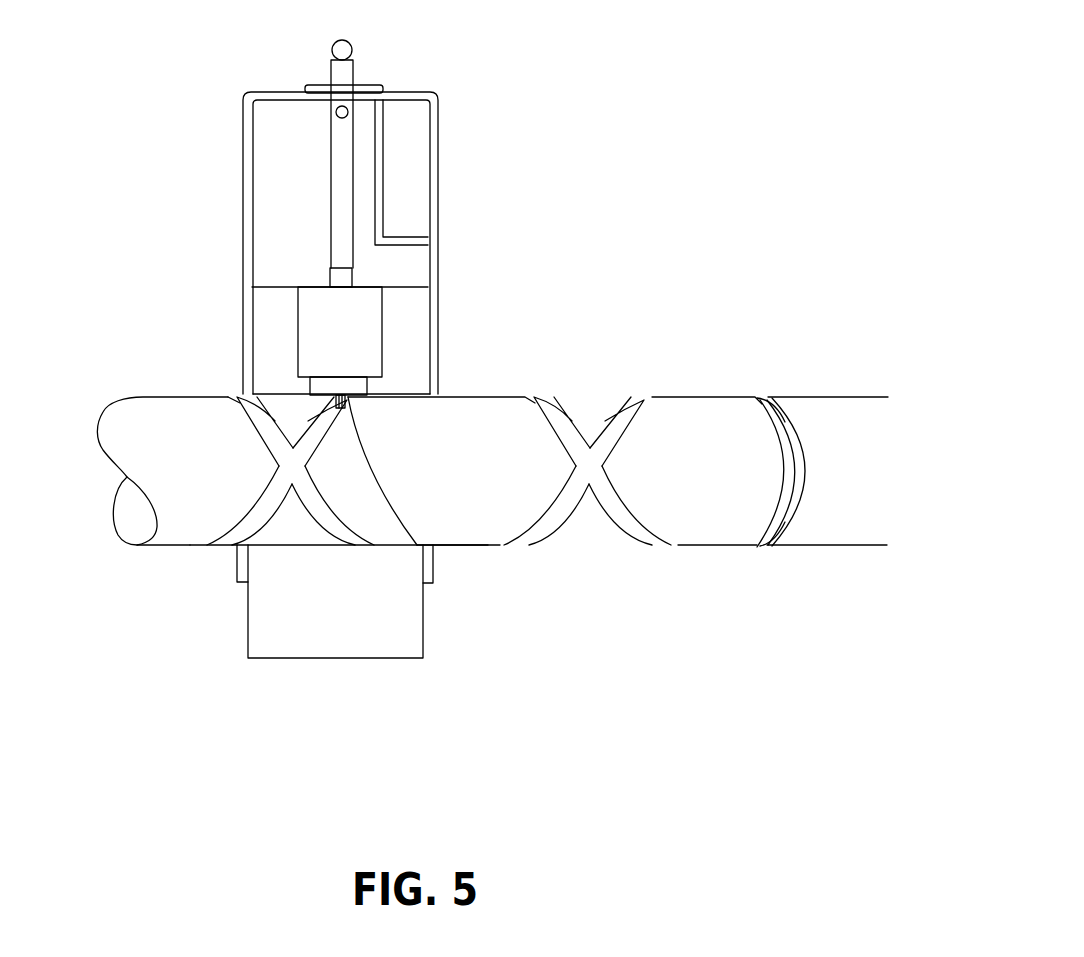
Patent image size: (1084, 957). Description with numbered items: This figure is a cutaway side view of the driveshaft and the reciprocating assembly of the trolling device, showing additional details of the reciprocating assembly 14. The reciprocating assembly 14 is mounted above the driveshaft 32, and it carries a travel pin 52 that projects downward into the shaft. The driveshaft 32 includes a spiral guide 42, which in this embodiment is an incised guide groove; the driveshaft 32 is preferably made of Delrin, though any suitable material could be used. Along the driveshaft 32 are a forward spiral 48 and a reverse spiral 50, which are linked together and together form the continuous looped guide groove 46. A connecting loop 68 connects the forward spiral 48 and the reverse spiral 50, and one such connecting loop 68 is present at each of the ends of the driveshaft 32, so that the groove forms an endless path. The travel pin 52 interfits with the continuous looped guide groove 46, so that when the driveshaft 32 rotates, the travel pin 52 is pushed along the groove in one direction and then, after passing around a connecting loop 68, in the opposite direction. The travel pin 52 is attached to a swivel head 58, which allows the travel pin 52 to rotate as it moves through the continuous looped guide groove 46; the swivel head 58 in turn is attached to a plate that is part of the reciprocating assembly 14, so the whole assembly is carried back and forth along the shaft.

The reciprocating assembly 14 is at (329, 335).
The spiral guide 42 is at (243, 132).
The swivel head 58 is at (308, 317).
The driveshaft 32 is at (172, 418).
The continuous looped guide groove 46 is at (550, 430).
The forward spiral 48 is at (692, 398).
The reverse spiral 50 is at (633, 533).
The travel pin 52 is at (342, 410).
The connecting loop 68 is at (787, 417).